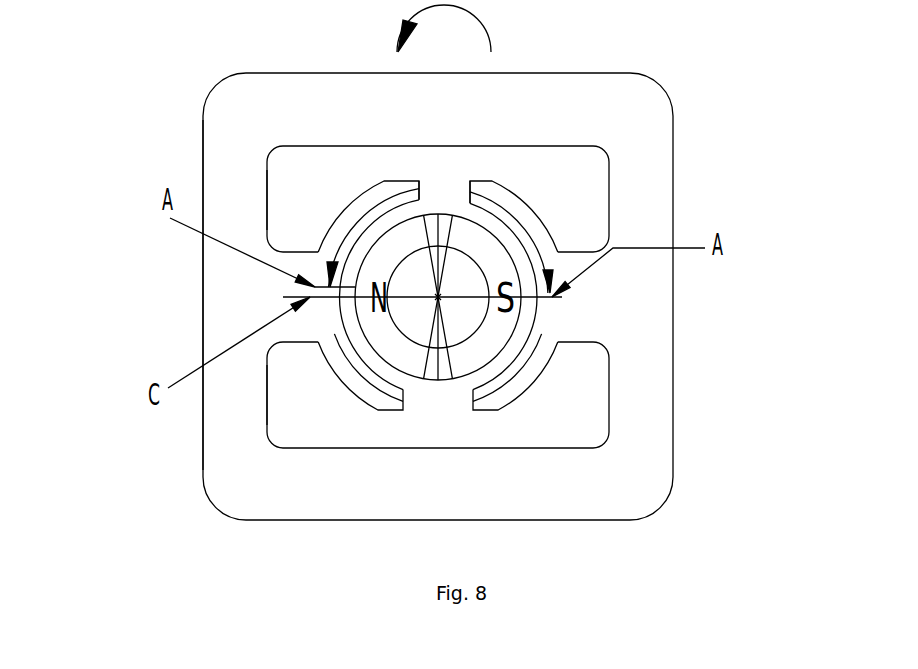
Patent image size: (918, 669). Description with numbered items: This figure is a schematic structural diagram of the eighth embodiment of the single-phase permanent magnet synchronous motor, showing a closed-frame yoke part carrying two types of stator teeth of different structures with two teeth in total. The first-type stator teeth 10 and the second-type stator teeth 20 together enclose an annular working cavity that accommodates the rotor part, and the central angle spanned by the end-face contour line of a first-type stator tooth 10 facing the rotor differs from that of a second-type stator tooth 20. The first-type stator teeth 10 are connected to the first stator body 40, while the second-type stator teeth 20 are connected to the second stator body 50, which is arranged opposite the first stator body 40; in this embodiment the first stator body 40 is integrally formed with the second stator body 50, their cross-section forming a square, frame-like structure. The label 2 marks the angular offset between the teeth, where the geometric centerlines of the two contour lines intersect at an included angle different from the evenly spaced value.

The first-type stator teeth 10 is at (348, 220).
The second-type stator teeth 20 is at (548, 338).
The first stator body 40 is at (220, 290).
The second stator body 50 is at (648, 322).
The air gap between stator poles 2 is at (444, 188).